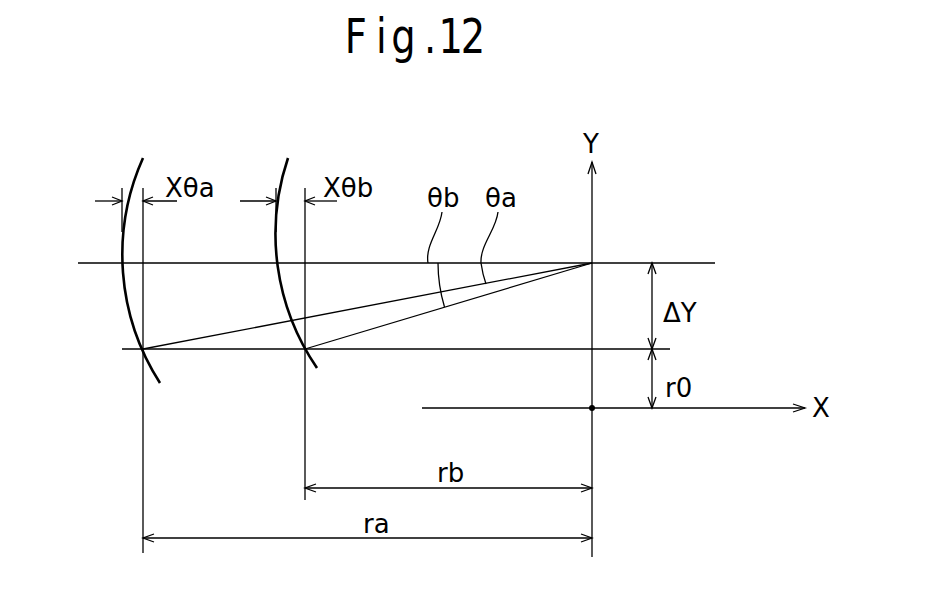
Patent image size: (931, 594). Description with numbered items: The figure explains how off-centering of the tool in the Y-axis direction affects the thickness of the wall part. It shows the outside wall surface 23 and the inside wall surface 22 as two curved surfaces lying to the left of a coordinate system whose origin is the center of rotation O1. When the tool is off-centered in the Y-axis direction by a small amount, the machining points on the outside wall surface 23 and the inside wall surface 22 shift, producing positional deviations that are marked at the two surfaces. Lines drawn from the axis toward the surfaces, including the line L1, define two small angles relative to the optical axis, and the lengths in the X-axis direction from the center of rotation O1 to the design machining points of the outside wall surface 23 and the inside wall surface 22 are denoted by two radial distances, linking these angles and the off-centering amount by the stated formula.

The inside wall surface 22 is at (287, 172).
The outside wall surface 23 is at (135, 177).
The light ray L1 is at (395, 350).
The center of rotation O1 is at (572, 427).